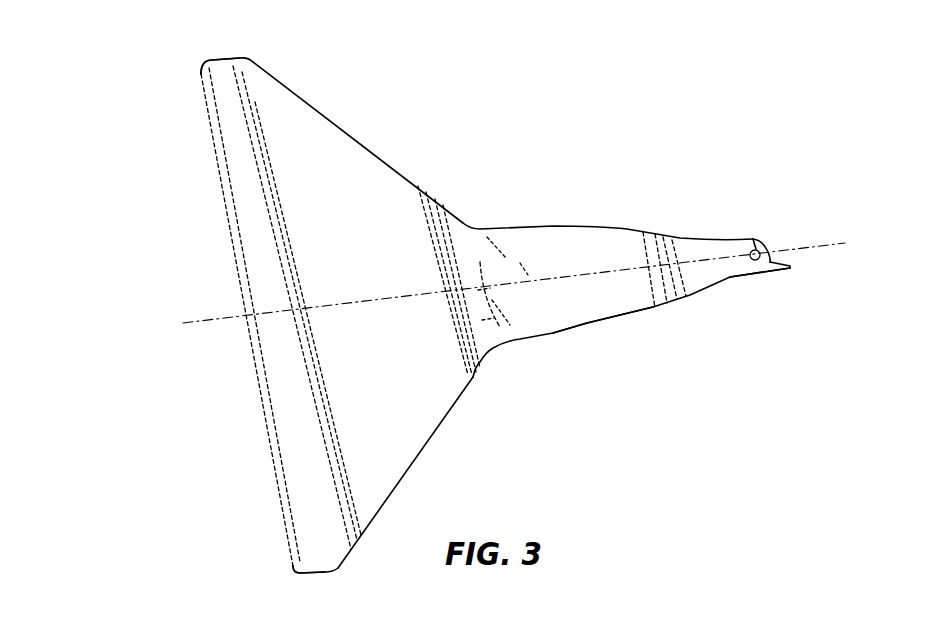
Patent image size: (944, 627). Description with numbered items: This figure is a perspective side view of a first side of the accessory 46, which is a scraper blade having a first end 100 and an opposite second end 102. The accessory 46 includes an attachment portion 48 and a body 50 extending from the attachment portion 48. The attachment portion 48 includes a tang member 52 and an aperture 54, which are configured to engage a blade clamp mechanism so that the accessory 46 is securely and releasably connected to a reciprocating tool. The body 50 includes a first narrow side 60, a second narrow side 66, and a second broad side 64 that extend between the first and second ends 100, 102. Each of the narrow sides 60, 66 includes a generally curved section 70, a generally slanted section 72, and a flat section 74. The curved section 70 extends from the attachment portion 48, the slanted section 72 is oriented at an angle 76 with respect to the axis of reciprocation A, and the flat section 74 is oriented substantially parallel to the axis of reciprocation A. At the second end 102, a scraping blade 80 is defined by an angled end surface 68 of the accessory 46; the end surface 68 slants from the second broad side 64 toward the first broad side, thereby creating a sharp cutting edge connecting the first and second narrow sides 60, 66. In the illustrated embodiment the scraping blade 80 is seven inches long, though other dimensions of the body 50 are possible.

The accessory 46 is at (107, 102).
The attachment portion 48 is at (770, 285).
The body 50 is at (563, 437).
The tang member 52 is at (792, 264).
The aperture 54 is at (757, 242).
The first narrow side 60 is at (628, 228).
The second broad side 64 is at (352, 383).
The second narrow side 66 is at (603, 330).
The angled end surface 68 is at (255, 380).
The curved section 70 is at (600, 255).
The slanted section 72 is at (390, 160).
The flat section 74 is at (218, 52).
The angle 76 is at (511, 300).
The scraping blade 80 is at (220, 245).
The first end 100 is at (768, 248).
The second end 102 is at (218, 172).
The axis of reciprocation A is at (215, 322).